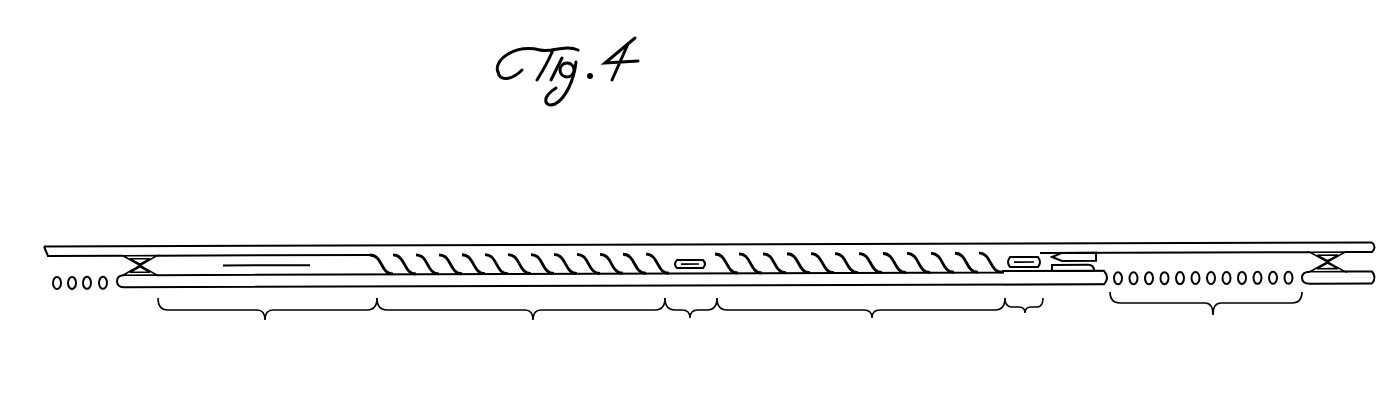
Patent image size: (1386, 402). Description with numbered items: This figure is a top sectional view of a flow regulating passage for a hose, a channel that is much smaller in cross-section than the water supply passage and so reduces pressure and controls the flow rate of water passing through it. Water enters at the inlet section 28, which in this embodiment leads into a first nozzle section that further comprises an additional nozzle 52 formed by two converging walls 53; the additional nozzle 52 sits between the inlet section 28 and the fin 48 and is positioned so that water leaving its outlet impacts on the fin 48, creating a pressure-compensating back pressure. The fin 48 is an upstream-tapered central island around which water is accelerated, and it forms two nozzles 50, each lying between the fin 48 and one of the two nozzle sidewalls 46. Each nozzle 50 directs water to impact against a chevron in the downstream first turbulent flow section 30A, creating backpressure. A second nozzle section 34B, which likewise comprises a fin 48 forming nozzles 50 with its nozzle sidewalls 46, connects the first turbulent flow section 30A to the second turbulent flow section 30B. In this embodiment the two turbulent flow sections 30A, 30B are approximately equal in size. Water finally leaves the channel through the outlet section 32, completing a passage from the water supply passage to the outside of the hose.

The inlet section 28 is at (1206, 313).
The first turbulent flow section 30A is at (860, 307).
The second turbulent flow section 30B is at (519, 309).
The outlet section 32 is at (267, 313).
The second nozzle section 34B is at (688, 327).
The nozzle sidewalls 46 is at (670, 259).
The fin 48 is at (696, 260).
The nozzle 50 is at (684, 259).
The additional nozzle 52 is at (1090, 284).
The converging walls 53 is at (1062, 255).